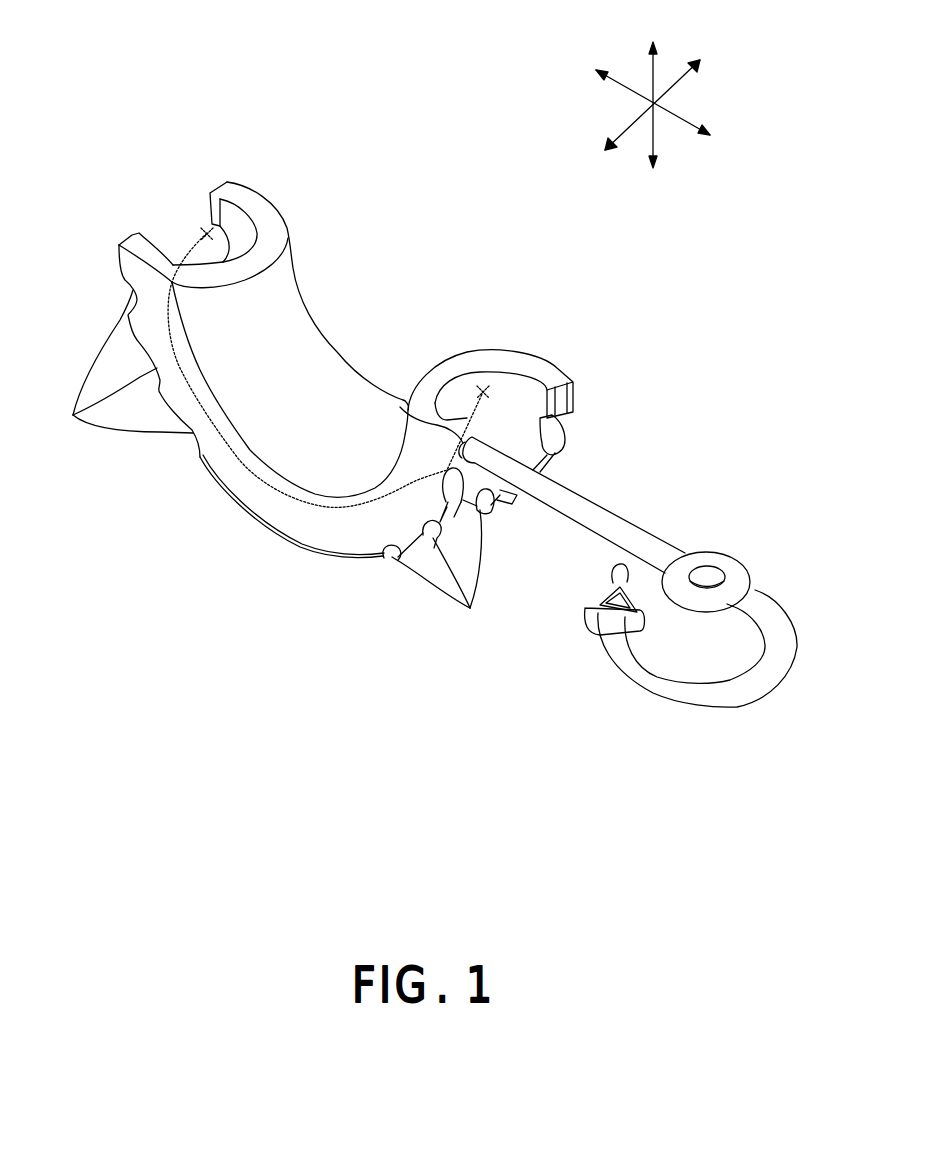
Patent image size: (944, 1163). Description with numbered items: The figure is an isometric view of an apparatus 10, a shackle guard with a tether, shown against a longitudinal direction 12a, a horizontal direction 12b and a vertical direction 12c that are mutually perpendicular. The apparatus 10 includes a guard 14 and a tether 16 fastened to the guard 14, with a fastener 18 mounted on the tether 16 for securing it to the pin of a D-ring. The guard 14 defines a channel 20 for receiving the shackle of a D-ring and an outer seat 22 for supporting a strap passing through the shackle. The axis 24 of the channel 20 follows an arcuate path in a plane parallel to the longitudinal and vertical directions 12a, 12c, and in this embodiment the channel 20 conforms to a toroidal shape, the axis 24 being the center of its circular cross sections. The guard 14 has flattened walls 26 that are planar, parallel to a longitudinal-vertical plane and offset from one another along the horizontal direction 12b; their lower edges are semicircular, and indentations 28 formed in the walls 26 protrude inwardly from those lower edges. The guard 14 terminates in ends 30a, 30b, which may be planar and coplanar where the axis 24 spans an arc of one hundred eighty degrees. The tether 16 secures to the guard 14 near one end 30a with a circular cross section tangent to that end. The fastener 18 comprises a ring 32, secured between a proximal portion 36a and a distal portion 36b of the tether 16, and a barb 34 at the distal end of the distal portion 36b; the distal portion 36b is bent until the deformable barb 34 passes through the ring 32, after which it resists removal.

The apparatus 10 is at (397, 268).
The longitudinal direction 12a is at (672, 112).
The horizontal direction 12b is at (677, 84).
The vertical direction 12c is at (652, 67).
The guard 14 is at (246, 520).
The tether 16 is at (560, 544).
The fastener 18 is at (696, 540).
The channel 20 is at (470, 390).
The outer seat 22 is at (327, 416).
The axis 24 is at (473, 417).
The flattened walls 26 is at (560, 370).
The indentations 28 is at (263, 437).
The end 30a is at (489, 362).
The end 30b is at (250, 205).
The ring 32 is at (726, 567).
The barb 34 is at (600, 605).
The proximal portion 36a is at (590, 520).
The distal portion 36b is at (765, 665).